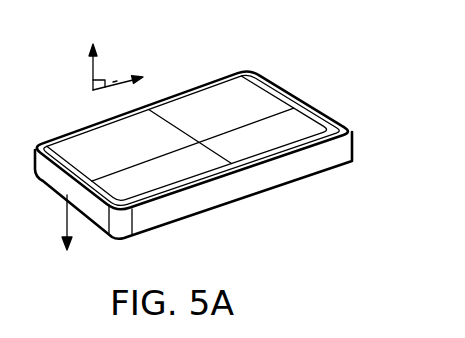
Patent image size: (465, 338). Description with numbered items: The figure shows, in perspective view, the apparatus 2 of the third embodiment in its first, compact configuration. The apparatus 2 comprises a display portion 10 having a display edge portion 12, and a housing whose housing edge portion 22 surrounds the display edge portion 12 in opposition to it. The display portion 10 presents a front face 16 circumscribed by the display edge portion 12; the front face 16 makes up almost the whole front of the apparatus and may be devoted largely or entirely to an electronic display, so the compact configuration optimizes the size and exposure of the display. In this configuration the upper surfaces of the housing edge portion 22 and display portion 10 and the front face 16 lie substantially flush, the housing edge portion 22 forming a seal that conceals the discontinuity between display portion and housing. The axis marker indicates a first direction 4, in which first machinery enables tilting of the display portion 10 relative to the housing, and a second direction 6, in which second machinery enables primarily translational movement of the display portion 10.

The apparatus 2 is at (217, 136).
The first direction 4 is at (93, 68).
The second direction 6 is at (113, 82).
The display portion 10 is at (245, 92).
The display edge portion 12 is at (300, 100).
The front face 16 is at (189, 160).
The housing edge portion 22 is at (341, 165).